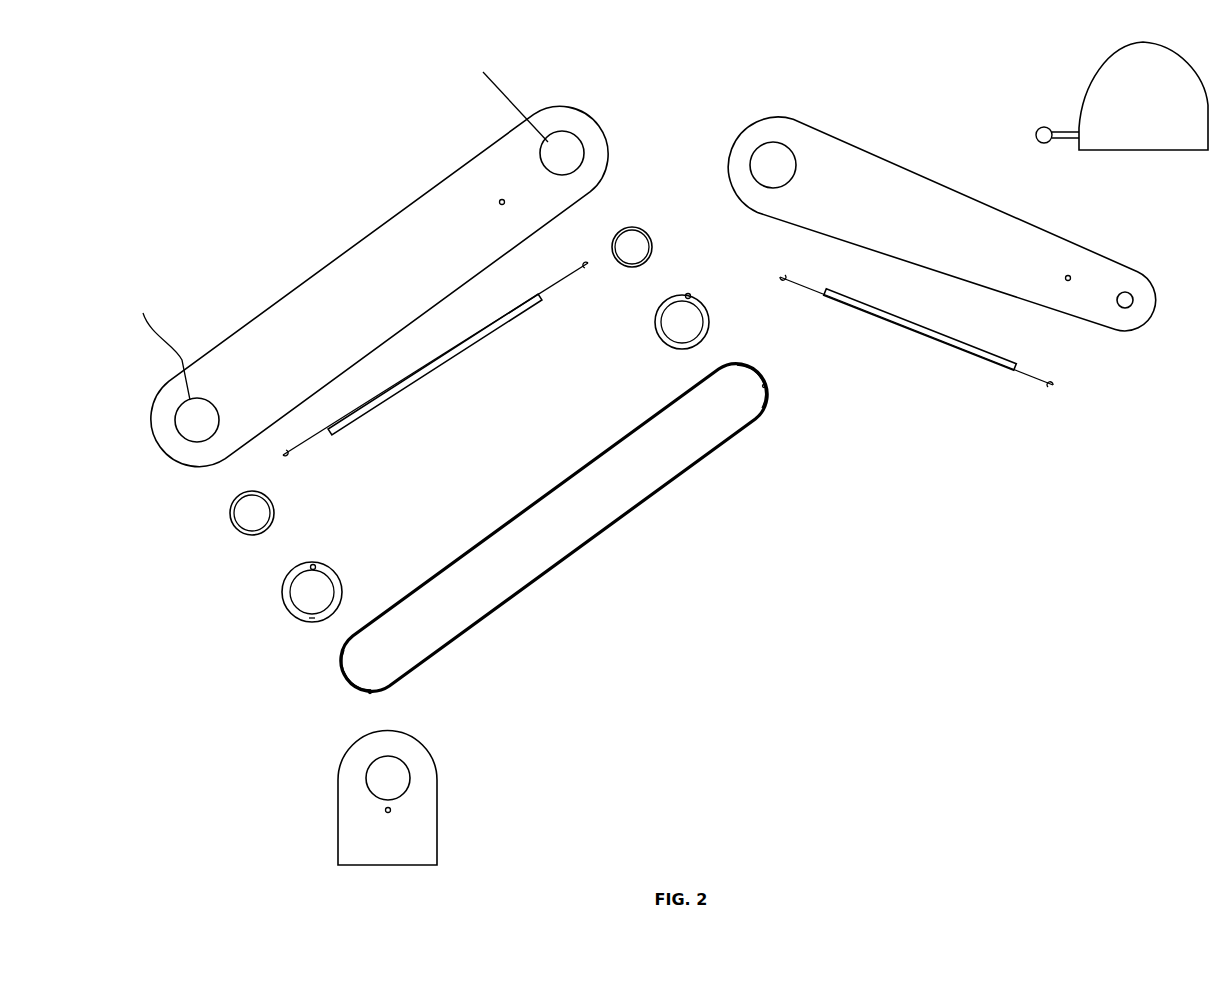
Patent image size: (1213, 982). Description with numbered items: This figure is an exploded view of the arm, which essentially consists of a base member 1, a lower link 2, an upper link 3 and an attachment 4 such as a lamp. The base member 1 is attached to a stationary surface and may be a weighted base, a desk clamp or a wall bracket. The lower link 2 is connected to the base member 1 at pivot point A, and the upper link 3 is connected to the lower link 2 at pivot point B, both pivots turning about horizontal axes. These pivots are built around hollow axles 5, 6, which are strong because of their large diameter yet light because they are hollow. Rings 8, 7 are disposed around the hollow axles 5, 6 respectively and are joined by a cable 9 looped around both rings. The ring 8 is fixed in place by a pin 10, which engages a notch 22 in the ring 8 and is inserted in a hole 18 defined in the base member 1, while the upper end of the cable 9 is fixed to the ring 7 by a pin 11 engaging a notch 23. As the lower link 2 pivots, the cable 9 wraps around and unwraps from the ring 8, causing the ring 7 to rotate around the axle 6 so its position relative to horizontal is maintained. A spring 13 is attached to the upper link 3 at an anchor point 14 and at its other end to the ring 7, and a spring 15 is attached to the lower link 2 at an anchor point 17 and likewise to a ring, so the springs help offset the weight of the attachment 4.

The base member 1 is at (345, 845).
The lower link 2 is at (350, 267).
The upper link 3 is at (895, 175).
The attachment 4 is at (1095, 85).
The hollow axle 5 is at (230, 512).
The hollow axle 6 is at (655, 255).
The ring 7 is at (653, 318).
The ring 8 is at (282, 590).
The cable 9 is at (442, 573).
The pin 10 is at (370, 694).
The pin 11 is at (765, 385).
The spring 13 is at (915, 328).
The anchor point 14 is at (1070, 273).
The spring 15 is at (428, 367).
The anchor point 17 is at (500, 199).
The hole 18 is at (393, 810).
The notch 22 is at (308, 623).
The notch 23 is at (705, 300).